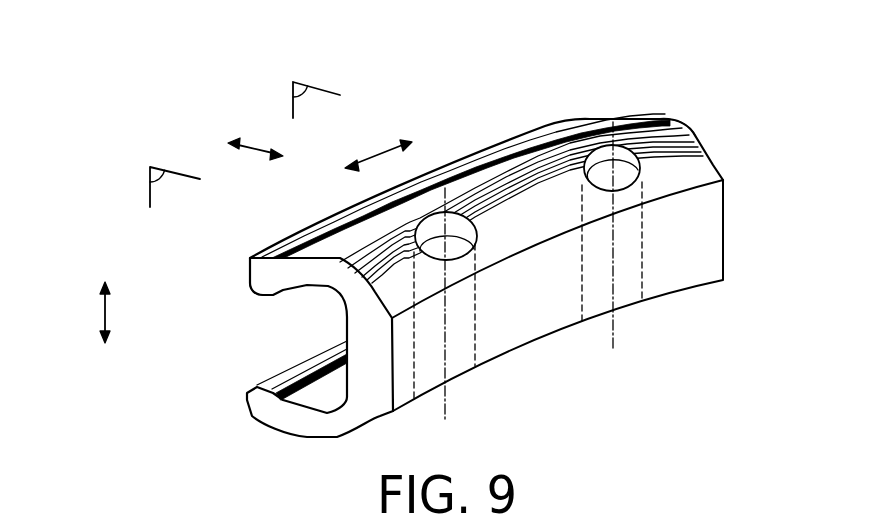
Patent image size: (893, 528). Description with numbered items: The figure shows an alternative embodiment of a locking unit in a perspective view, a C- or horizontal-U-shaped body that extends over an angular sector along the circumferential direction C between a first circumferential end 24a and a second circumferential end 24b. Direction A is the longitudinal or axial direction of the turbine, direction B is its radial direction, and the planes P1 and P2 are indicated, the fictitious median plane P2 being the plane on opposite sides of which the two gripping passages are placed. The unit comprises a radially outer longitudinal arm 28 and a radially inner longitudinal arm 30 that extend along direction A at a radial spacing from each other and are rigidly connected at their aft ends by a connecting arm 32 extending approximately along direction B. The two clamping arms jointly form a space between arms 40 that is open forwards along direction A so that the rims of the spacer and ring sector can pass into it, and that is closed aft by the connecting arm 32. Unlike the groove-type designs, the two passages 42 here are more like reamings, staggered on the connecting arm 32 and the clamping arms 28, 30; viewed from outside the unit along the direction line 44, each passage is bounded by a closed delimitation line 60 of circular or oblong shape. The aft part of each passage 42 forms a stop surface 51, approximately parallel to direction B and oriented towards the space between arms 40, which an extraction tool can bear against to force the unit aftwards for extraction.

The first circumferential end 24a is at (243, 275).
The second circumferential end 24b is at (690, 119).
The radially outer longitudinal arm 28 is at (297, 267).
The radially inner longitudinal arm 30 is at (289, 410).
The connecting arm 32 is at (693, 170).
The space between arms 40 is at (297, 320).
The passage 42 is at (457, 232).
The direction line 44 is at (448, 404).
The stop surface 51 is at (465, 243).
The closed delimitation line 60 is at (417, 260).
The first plane angle P1 is at (157, 167).
The fictitious median plane P2 is at (297, 90).
The direction A is at (257, 143).
The direction B is at (103, 305).
The direction C is at (376, 153).